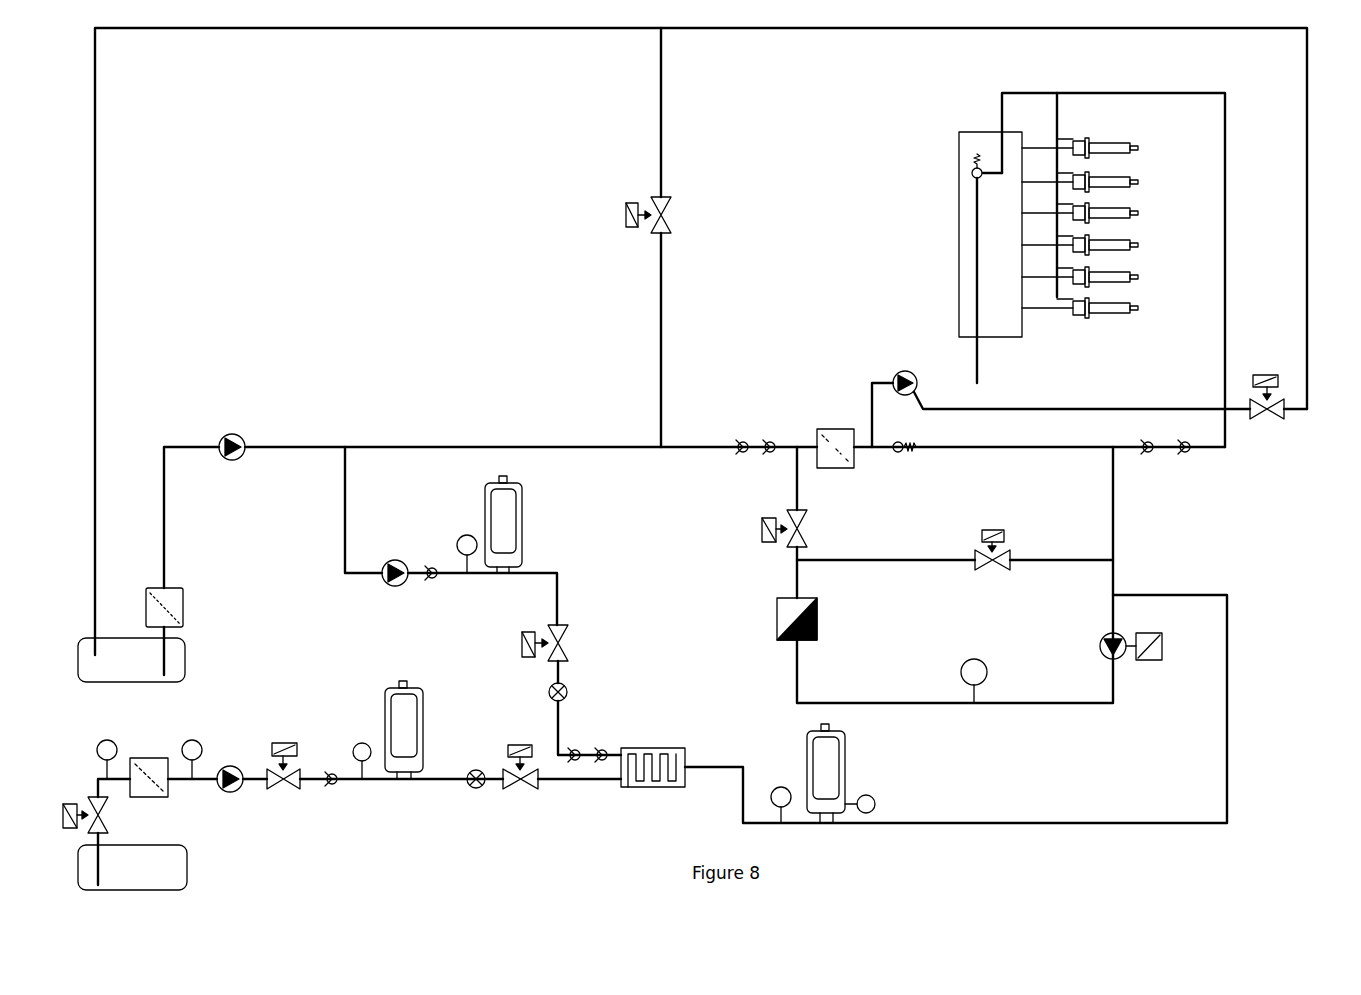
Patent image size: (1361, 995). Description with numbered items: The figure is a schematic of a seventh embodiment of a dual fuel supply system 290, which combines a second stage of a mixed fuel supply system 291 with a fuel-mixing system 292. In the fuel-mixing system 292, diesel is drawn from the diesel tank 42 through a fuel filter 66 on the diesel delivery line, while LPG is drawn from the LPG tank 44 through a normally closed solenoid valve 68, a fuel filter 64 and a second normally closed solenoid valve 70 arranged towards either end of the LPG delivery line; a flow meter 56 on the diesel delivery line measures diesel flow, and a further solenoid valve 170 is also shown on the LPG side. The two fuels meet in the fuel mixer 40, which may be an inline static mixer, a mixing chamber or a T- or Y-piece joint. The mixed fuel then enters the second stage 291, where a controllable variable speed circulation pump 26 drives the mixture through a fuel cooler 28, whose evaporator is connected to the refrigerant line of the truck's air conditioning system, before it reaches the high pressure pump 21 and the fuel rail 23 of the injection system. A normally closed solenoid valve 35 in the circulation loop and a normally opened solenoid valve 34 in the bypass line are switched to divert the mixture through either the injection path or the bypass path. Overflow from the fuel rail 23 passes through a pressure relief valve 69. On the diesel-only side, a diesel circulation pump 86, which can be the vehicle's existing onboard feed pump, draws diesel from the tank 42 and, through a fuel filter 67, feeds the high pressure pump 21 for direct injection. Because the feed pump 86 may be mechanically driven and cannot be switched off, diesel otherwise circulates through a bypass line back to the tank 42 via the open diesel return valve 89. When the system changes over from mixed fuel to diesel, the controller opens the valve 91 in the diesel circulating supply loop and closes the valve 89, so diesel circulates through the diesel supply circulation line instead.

The pressure relief valve 69 is at (967, 155).
The fuel rail 23 is at (1009, 247).
The high pressure pump 21 is at (907, 370).
The fuel filter 67 is at (833, 429).
The diesel return valve 89 is at (669, 214).
The valve 91 is at (1267, 421).
The diesel circulation pump 86 is at (233, 433).
The fuel filter 66 is at (183, 588).
The diesel tank 42 is at (131, 660).
The normally closed solenoid valve 35 is at (765, 516).
The normally opened solenoid valve 34 is at (1005, 533).
The fuel cooler 28 is at (777, 617).
The circulation pump 26 is at (1148, 622).
The dual fuel supply system 290 is at (1290, 505).
The second stage of mixed fuel supply system 291 is at (1257, 623).
The fuel-mixing system 292 is at (437, 814).
The flow meter 56 is at (548, 691).
The solenoid valve 170 is at (520, 790).
The fuel mixer 40 is at (636, 772).
The normally closed solenoid valve 70 is at (283, 792).
The fuel filter 64 is at (150, 758).
The normally closed solenoid valve 68 is at (66, 804).
The LPG tank 44 is at (132, 867).